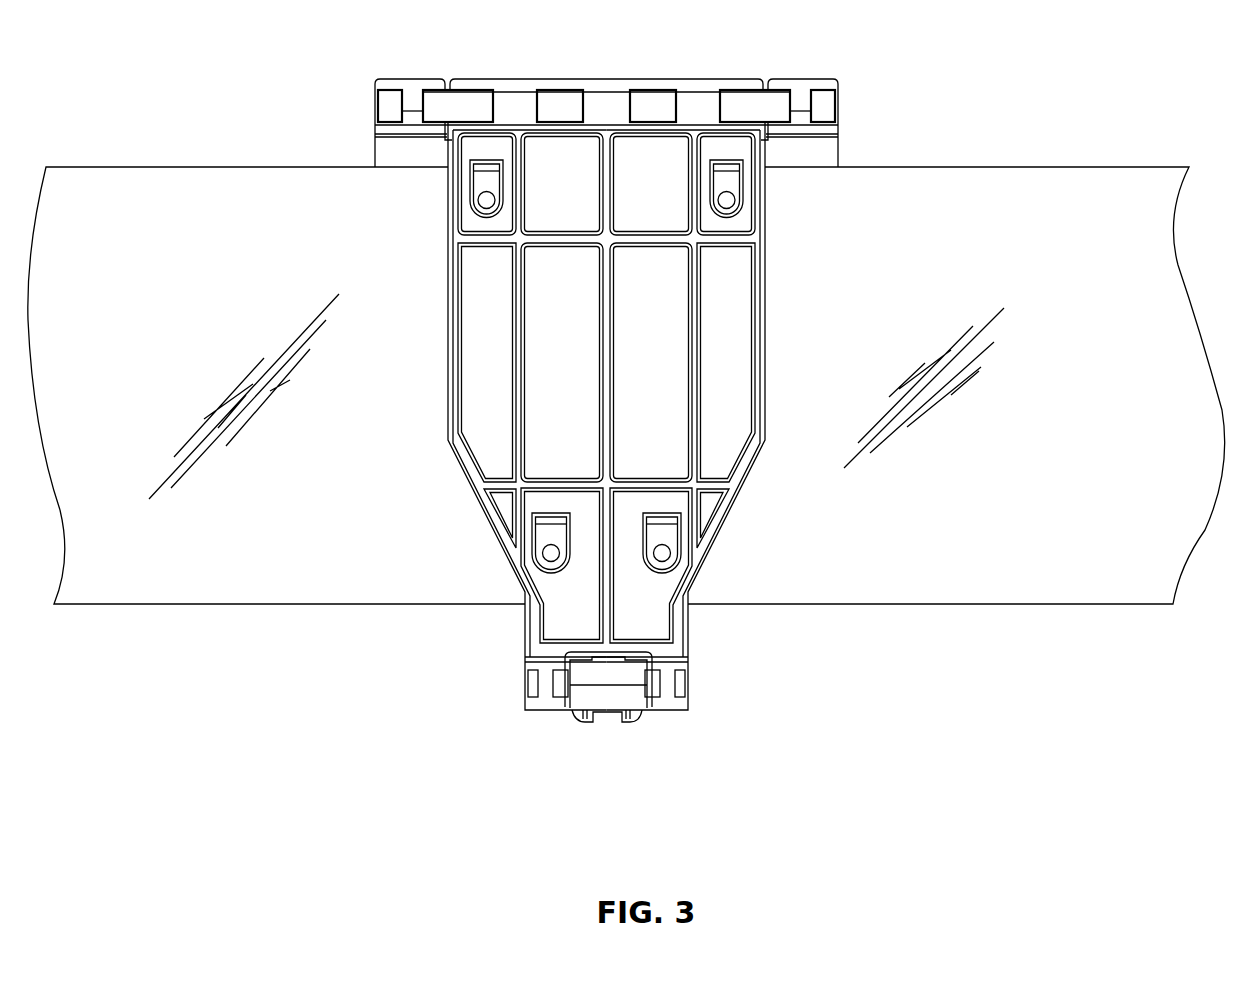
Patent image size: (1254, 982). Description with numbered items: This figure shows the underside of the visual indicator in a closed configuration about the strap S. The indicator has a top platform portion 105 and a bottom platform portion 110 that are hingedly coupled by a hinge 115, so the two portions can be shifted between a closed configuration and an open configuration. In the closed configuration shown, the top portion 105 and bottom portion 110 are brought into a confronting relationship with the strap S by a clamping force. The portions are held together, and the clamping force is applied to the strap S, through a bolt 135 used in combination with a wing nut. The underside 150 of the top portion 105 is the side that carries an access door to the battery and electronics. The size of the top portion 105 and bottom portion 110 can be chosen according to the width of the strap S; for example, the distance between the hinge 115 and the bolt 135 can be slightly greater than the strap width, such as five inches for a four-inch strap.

The top platform portion 105 is at (838, 150).
The bottom platform portion 110 is at (449, 258).
The hinge 115 is at (605, 79).
The bolt 135 is at (608, 715).
The underside 150 is at (392, 153).
The strap S is at (212, 360).